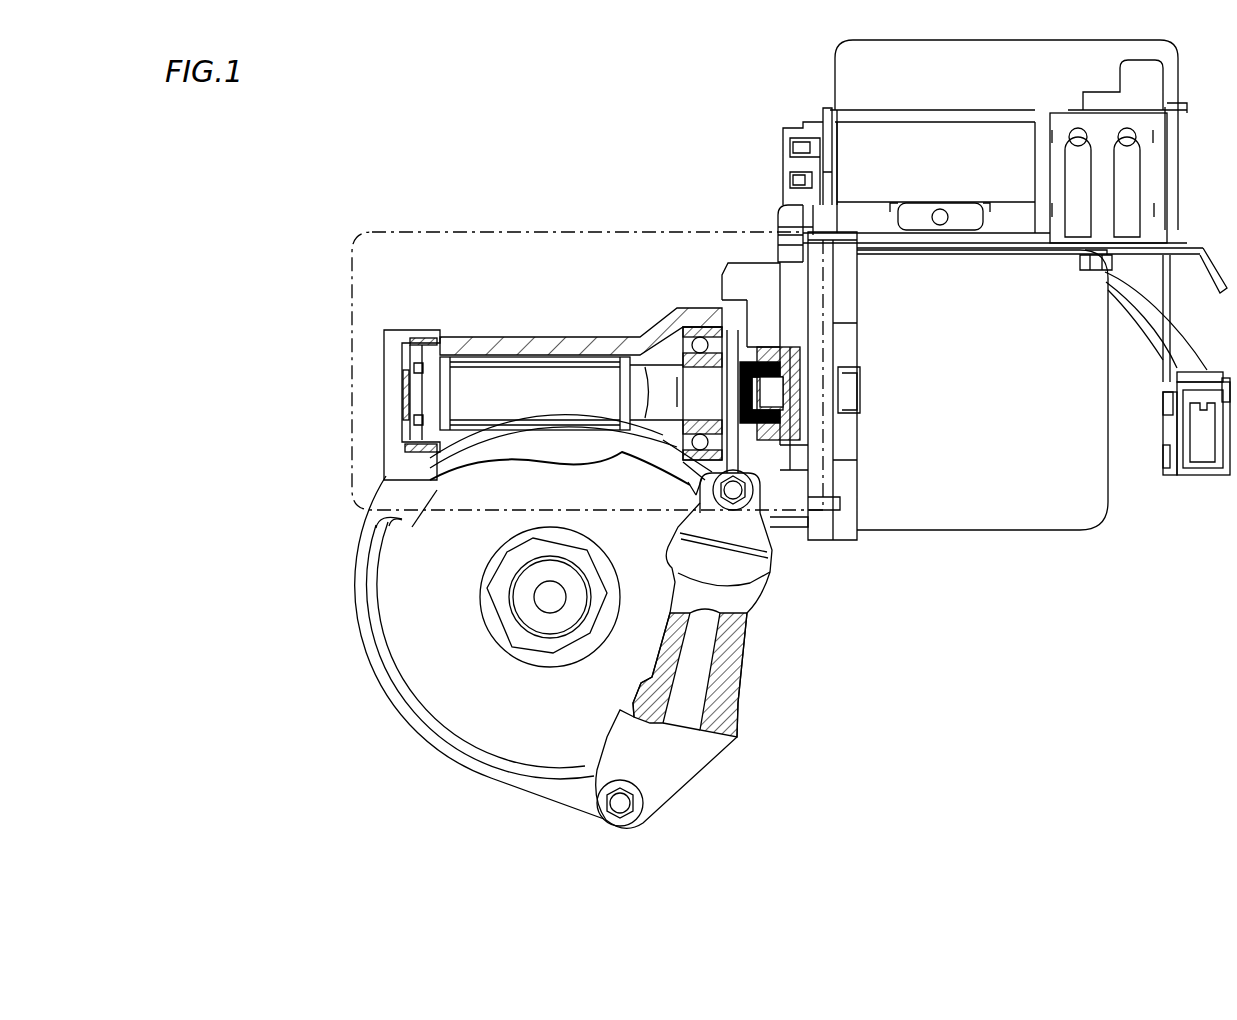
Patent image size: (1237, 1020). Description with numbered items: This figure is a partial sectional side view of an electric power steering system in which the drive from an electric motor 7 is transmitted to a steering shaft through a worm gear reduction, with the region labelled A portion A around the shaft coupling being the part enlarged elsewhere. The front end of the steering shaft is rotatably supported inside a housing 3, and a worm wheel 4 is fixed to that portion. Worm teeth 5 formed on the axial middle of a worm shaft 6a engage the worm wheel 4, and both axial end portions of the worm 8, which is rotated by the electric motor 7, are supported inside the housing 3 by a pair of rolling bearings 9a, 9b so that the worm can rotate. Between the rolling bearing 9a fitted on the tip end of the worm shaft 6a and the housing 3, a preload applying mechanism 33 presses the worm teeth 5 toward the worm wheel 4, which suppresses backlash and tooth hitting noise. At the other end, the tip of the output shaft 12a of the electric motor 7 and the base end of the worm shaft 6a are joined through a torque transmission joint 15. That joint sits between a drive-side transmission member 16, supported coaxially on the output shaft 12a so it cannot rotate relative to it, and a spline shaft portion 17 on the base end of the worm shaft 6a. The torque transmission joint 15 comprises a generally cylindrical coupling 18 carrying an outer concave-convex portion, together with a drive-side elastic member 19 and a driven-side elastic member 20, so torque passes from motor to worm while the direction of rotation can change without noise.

The A portion A is at (413, 232).
The housing 3 is at (453, 713).
The worm wheel 4 is at (540, 453).
The worm teeth 5 is at (500, 375).
The worm shaft 6a is at (467, 393).
The electric motor 7 is at (994, 507).
The worm 8 is at (633, 383).
The rolling bearing 9a is at (403, 418).
The rolling bearing 9b is at (700, 335).
The output shaft 12a is at (790, 392).
The torque transmission joint 15 is at (778, 450).
The drive-side transmission member 16 is at (795, 440).
The spline shaft portion 17 is at (753, 510).
The coupling 18 is at (747, 400).
The drive-side elastic member 19 is at (767, 310).
The driven-side elastic member 20 is at (737, 300).
The preload applying mechanism 33 is at (423, 340).